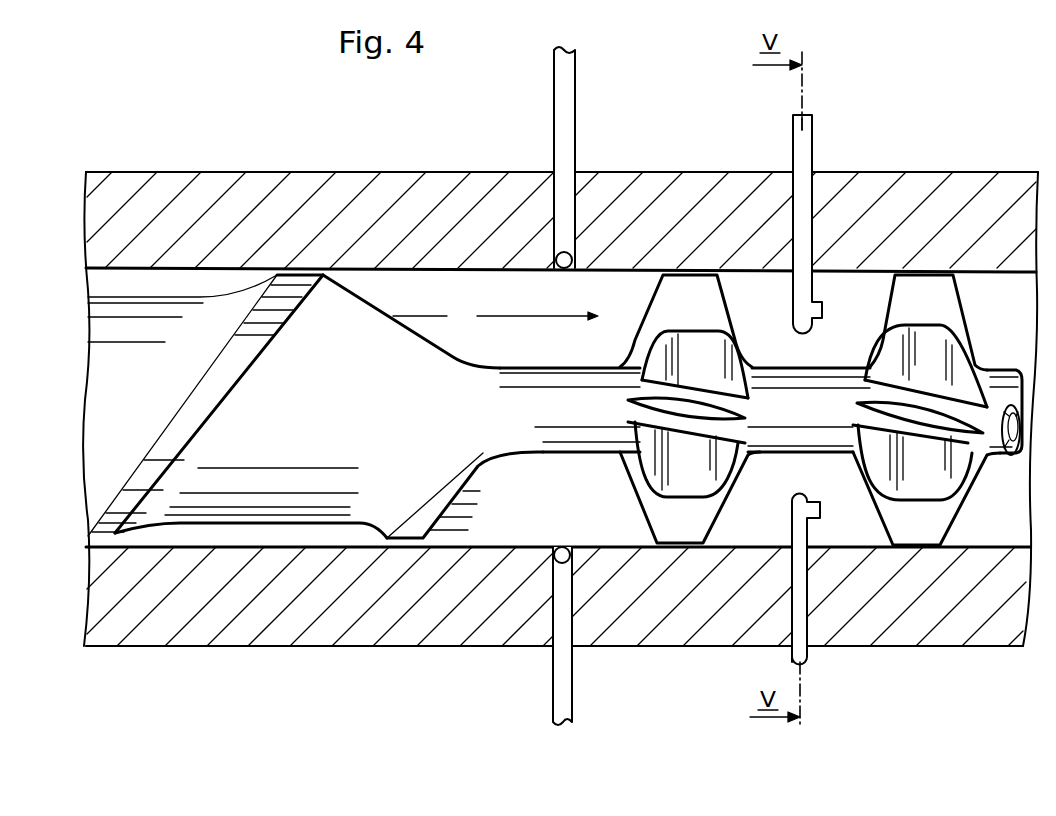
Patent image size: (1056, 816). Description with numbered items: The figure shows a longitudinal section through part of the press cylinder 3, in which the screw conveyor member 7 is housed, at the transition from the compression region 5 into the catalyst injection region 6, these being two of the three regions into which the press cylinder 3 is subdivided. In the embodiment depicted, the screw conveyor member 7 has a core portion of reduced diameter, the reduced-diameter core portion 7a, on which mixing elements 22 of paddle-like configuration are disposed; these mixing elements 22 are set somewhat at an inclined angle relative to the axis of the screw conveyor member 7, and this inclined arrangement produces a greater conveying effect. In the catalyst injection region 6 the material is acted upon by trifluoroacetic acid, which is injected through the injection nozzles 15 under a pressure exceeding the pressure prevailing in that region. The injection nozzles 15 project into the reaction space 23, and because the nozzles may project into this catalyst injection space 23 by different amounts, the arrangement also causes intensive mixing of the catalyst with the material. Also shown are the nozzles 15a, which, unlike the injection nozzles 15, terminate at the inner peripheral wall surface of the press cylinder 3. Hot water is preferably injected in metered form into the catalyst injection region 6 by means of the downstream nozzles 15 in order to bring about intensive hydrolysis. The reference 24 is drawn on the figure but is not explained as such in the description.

The press cylinder 3 is at (372, 200).
The screw conveyor member 7 is at (283, 275).
The reduced-diameter core portion 7a is at (575, 328).
The nozzles 15a is at (563, 108).
The injection nozzles 15 is at (803, 148).
The pin 24 is at (792, 498).
The reaction space 23 is at (870, 288).
The mixing elements 22 is at (712, 297).
The compression region 5 is at (380, 743).
The catalyst injection region 6 is at (1020, 745).